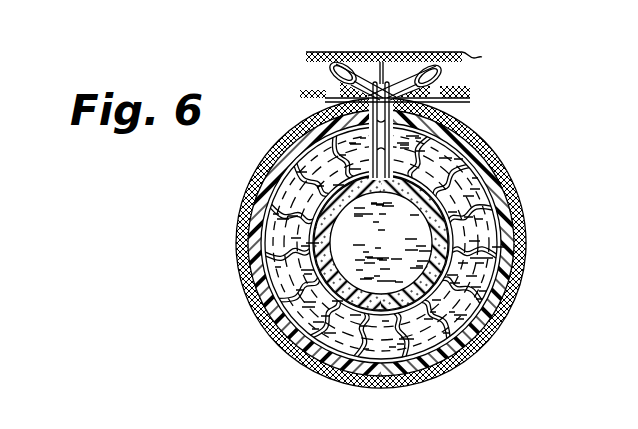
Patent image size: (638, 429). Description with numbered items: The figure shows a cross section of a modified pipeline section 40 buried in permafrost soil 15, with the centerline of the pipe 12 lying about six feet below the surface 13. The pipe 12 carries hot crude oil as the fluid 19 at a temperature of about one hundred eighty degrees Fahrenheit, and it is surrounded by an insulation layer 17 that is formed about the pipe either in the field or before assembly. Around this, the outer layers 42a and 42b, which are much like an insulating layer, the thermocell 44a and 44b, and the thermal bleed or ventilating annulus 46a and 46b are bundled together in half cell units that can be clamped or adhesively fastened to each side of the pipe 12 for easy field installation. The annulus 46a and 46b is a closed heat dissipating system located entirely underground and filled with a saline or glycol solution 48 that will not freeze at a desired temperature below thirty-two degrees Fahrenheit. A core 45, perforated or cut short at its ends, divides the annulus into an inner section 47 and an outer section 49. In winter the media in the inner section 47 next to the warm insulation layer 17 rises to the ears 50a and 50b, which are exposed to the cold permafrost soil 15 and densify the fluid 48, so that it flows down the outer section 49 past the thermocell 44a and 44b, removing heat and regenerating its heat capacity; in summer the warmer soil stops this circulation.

The pipe 12 is at (437, 257).
The surface 13 is at (470, 56).
The permafrost soil 15 is at (462, 132).
The insulation layer 17 is at (391, 242).
The fluid 19 is at (400, 247).
The pipeline section 40 is at (513, 168).
The outer layer 42a is at (280, 338).
The outer layer 42b is at (497, 330).
The thermocell 44a is at (268, 288).
The thermocell 44b is at (488, 300).
The core 45 is at (449, 350).
The ventilating annulus 46a is at (298, 243).
The ventilating annulus 46b is at (502, 255).
The inner section 47 is at (292, 352).
The saline or glycol solution 48 is at (287, 153).
The outer section 49 is at (323, 357).
The ear 50a is at (330, 70).
The ear 50b is at (440, 80).